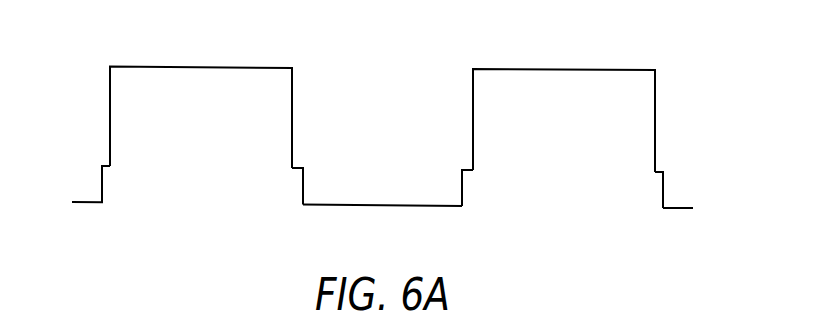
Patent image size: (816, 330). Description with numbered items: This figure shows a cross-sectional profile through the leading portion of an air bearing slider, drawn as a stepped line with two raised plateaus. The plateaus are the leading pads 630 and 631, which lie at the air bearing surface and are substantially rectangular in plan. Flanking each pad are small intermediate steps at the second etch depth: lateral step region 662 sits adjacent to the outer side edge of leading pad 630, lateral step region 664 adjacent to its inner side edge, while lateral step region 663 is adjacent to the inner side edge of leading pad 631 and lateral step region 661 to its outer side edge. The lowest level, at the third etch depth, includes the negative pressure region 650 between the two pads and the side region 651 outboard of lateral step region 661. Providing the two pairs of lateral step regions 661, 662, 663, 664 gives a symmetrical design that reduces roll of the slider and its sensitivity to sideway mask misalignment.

The leading pad 630 is at (210, 65).
The leading pad 631 is at (570, 68).
The negative pressure region 650 is at (383, 203).
The side region 651 is at (683, 205).
The lateral step region 661 is at (658, 170).
The lateral step region 662 is at (103, 165).
The lateral step region 663 is at (467, 167).
The lateral step region 664 is at (298, 167).